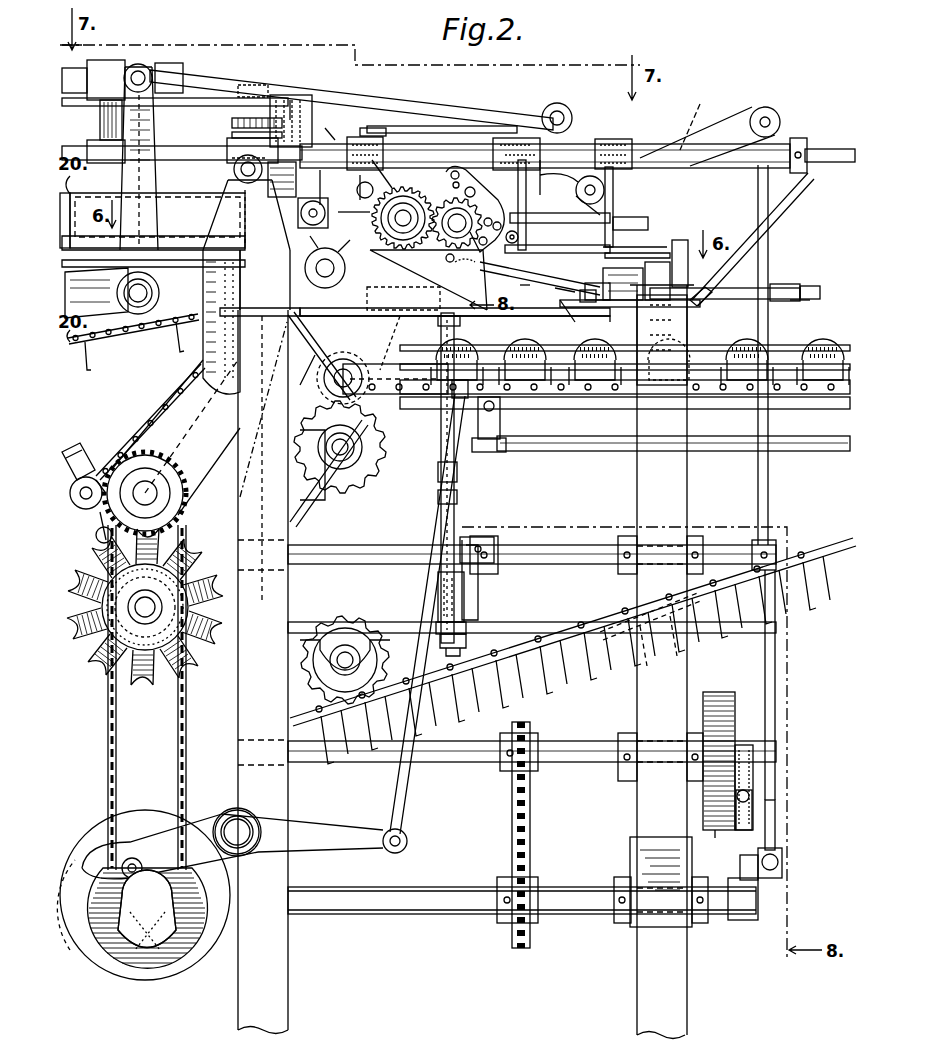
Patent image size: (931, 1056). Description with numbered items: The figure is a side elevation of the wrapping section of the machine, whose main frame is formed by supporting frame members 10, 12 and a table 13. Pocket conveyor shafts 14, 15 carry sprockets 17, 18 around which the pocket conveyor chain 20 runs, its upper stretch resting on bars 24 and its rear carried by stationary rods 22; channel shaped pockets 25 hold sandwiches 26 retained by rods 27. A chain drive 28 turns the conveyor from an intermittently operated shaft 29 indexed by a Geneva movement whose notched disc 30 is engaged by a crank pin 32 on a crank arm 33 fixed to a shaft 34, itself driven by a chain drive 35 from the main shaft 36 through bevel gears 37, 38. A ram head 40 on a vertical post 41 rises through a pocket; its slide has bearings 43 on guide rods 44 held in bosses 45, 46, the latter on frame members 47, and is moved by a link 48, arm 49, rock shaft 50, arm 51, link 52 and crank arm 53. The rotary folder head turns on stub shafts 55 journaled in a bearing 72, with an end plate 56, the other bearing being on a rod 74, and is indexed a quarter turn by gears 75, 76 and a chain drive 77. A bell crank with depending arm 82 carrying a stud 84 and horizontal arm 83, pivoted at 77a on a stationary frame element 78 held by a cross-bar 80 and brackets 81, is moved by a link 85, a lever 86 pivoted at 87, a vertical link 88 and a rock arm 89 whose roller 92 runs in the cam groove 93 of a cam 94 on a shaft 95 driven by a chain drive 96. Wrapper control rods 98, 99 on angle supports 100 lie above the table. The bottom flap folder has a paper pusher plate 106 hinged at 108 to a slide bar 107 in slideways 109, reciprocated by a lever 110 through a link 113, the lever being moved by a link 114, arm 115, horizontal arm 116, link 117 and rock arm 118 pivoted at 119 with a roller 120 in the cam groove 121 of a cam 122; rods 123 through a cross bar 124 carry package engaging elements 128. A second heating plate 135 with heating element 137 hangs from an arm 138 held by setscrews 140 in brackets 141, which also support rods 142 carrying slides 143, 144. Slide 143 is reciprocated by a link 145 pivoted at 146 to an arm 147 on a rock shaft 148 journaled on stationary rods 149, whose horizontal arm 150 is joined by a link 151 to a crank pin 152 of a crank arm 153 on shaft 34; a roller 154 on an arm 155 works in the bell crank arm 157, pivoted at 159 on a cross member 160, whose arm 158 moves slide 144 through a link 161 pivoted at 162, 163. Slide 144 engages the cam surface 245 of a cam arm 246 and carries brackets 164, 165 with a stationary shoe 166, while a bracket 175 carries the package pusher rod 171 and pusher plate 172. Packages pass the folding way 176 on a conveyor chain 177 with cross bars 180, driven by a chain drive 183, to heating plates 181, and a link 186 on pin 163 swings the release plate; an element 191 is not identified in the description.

The supporting frame member 10 is at (288, 968).
The supporting frame member 12 is at (640, 980).
The table 13 is at (528, 314).
The pocket conveyor shaft 14 is at (345, 456).
The pocket conveyor shaft 15 is at (352, 665).
The sprocket 17 is at (337, 481).
The sprocket 18 is at (345, 660).
The pocket conveyor chain 20 is at (806, 569).
The stationary rods 22 is at (790, 453).
The bars 24 is at (608, 405).
The article receiving pockets 25 is at (730, 392).
The sandwiches or cookies 26 is at (826, 341).
The rods 27 is at (790, 347).
The chain drive 28 is at (330, 500).
The intermittently operated shaft 29 is at (145, 607).
The notched disc 30 is at (80, 625).
The crank pin 32 is at (98, 536).
The crank arm 33 is at (98, 520).
The shaft 34 is at (152, 482).
The chain drive 35 is at (106, 757).
The main shaft 36 is at (333, 900).
The bevel gear 37 is at (92, 940).
The bevel gear 38 is at (160, 870).
The ram head 40 is at (484, 424).
The vertical post 41 is at (458, 468).
The bearings 43 is at (462, 502).
The vertical guide rods 44 is at (440, 330).
The bosses 45 is at (470, 320).
The bosses 46 is at (438, 611).
The frame members 47 is at (506, 628).
The link 48 is at (456, 650).
The arm 49 is at (476, 598).
The rock shaft 50 is at (538, 557).
The arm 51 is at (772, 724).
The link 52 is at (775, 832).
The crank arm 53 is at (758, 898).
The stub shafts 55 is at (457, 223).
The end plate 56 is at (460, 170).
The bearing 72 is at (490, 262).
The rod 74 is at (560, 285).
The gear 75 is at (474, 192).
The gear 76 is at (414, 192).
The chain drive 77 is at (215, 416).
The pivot 77a is at (550, 177).
The stationary frame element 78 is at (642, 140).
The cross-bar 80 is at (803, 137).
The brackets 81 is at (786, 190).
The depending arm 82 is at (524, 196).
The horizontal arm 83 is at (580, 188).
The stud 84 is at (520, 238).
The link 85 is at (585, 200).
The lever 86 is at (722, 128).
The pivot 87 is at (696, 117).
The vertical link 88 is at (768, 244).
The rock arm 89 is at (750, 760).
The roller 92 is at (743, 817).
The cam groove 93 is at (720, 830).
The cam 94 is at (718, 692).
The shaft 95 is at (596, 770).
The chain drive 96 is at (510, 832).
The wrapper control rod 98 is at (427, 280).
The wrapper control rod 99 is at (465, 272).
The angle shaped supports 100 is at (420, 335).
The paper pusher plate 106 is at (520, 300).
The slide bar 107 is at (816, 293).
The pivot 108 is at (585, 293).
The slideways 109 is at (710, 305).
The lever 110 is at (636, 300).
The link 113 is at (672, 234).
The link 114 is at (560, 314).
The upwardly extending arm 115 is at (335, 345).
The horizontal arm 116 is at (416, 396).
The link 117 is at (430, 580).
The rock arm 118 is at (328, 825).
The pivot 119 is at (250, 812).
The roller 120 is at (110, 862).
The cam groove 121 is at (108, 962).
The cam 122 is at (146, 960).
The rods 123 is at (798, 296).
The cross bar 124 is at (784, 285).
The package engaging elements 128 is at (533, 275).
The second heating plate 135 is at (352, 182).
The heating element 137 is at (358, 190).
The arm 138 is at (293, 179).
The setscrews 140 is at (230, 158).
The brackets 141 is at (236, 165).
The fore-and-aft extending rods 142 is at (828, 148).
The slide 143 is at (512, 160).
The slide 144 is at (362, 135).
The link 145 is at (508, 108).
The pivot 146 is at (566, 110).
The arm 147 is at (140, 157).
The rock shaft 148 is at (150, 296).
The stationary rods 149 is at (148, 287).
The horizontal arm 150 is at (153, 277).
The link 151 is at (72, 452).
The crank pin 152 is at (94, 478).
The crank arm 153 is at (96, 478).
The roller 154 is at (395, 130).
The arm 155 is at (590, 135).
The bell crank arm 157 is at (455, 125).
The bell crank arm 158 is at (240, 122).
The pivot 159 is at (205, 90).
The stationary cross member 160 is at (240, 136).
The link 161 is at (296, 110).
The pivotal connection 162 is at (255, 84).
The pivot pin 163 is at (290, 95).
The bracket 164 is at (298, 216).
The bracket 165 is at (322, 198).
The stationary shoe 166 is at (345, 240).
The package pusher rod 171 is at (576, 233).
The package pusher plate 172 is at (526, 210).
The bracket 175 is at (614, 203).
The folding way 176 is at (157, 220).
The conveyor chain 177 is at (154, 328).
The cross bars 180 is at (92, 352).
The heating plates 181 is at (68, 202).
The chain drive 183 is at (188, 385).
The link 186 is at (296, 96).
The roller 191 is at (244, 182).
The cam surface 245 is at (330, 130).
The bell crank shaped cam arm 246 is at (380, 164).